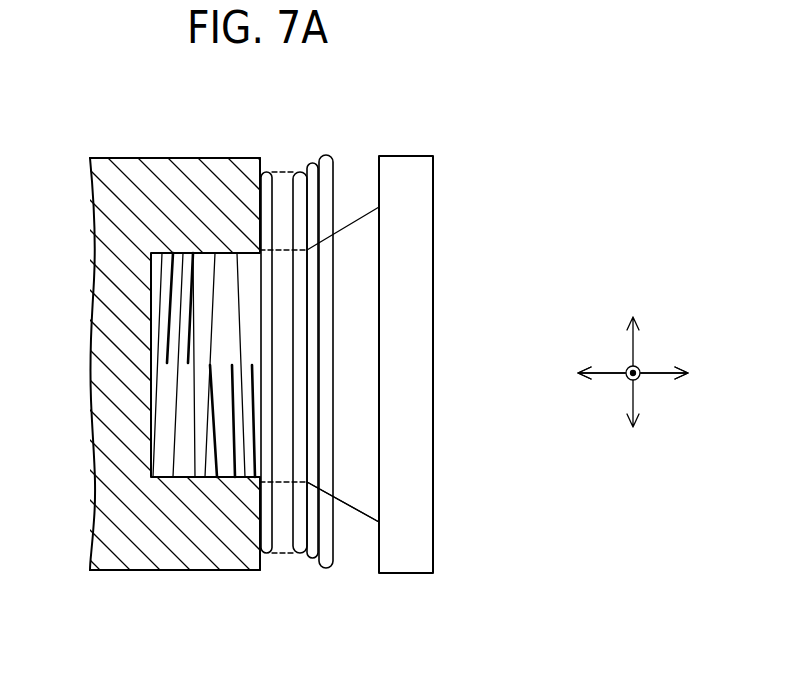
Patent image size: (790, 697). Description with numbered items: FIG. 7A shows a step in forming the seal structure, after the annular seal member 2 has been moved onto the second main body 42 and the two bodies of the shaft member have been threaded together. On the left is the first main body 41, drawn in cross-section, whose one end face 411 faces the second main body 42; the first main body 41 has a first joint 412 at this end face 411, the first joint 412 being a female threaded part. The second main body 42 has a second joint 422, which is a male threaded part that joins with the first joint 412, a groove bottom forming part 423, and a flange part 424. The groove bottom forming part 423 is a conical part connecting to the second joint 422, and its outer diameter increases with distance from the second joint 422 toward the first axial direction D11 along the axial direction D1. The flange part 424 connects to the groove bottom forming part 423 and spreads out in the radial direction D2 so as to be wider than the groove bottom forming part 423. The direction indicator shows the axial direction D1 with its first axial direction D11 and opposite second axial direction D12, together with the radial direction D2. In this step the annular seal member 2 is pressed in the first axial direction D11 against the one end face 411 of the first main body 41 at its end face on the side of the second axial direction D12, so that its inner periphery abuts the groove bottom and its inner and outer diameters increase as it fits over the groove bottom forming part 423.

The first main body 41 is at (127, 149).
The one end face 411 is at (262, 569).
The first joint 412 is at (118, 472).
The second joint 422 is at (207, 170).
The annular seal member 2 is at (291, 150).
The second main body 42 is at (411, 150).
The groove bottom forming part 423 is at (352, 490).
The flange part 424 is at (410, 560).
The axial direction D1 is at (652, 378).
The radial direction D2 is at (636, 353).
The first axial direction D11 is at (688, 373).
The second axial direction D12 is at (577, 373).